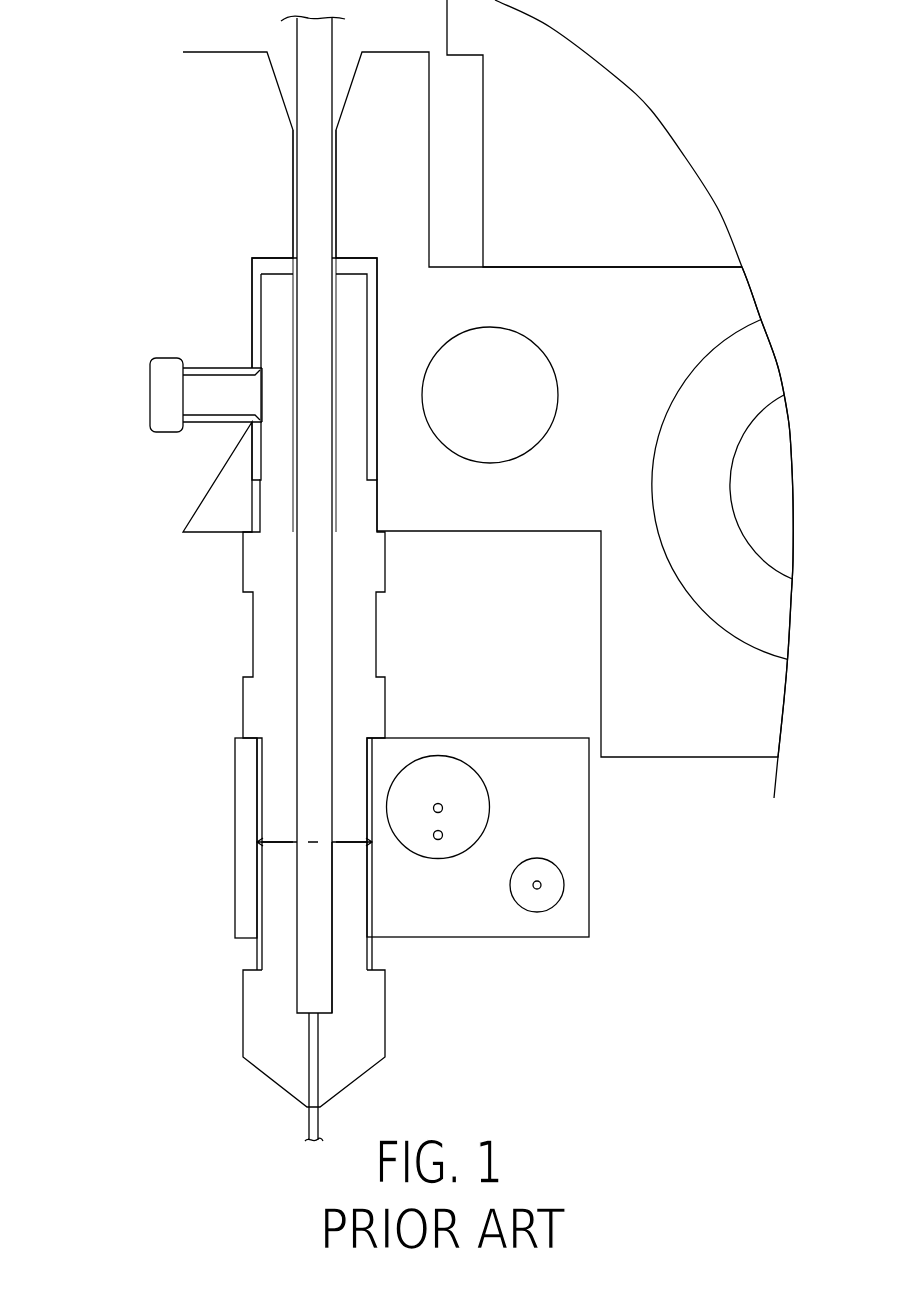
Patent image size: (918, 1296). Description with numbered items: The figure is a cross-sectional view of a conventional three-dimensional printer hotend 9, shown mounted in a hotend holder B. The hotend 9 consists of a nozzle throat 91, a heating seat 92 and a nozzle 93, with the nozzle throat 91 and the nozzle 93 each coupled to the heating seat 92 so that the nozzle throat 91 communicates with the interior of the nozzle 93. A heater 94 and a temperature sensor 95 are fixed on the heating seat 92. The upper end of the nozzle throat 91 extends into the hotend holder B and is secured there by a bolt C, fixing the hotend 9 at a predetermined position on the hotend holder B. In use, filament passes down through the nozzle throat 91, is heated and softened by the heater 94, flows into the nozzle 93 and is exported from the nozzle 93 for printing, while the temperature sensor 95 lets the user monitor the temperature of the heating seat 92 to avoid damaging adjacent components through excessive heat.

The hotend holder B is at (215, 168).
The bolt C is at (162, 388).
The hotend 9 is at (217, 787).
The nozzle throat 91 is at (253, 633).
The heating seat 92 is at (590, 853).
The nozzle 93 is at (272, 1067).
The heater 94 is at (432, 770).
The temperature sensor 95 is at (553, 893).